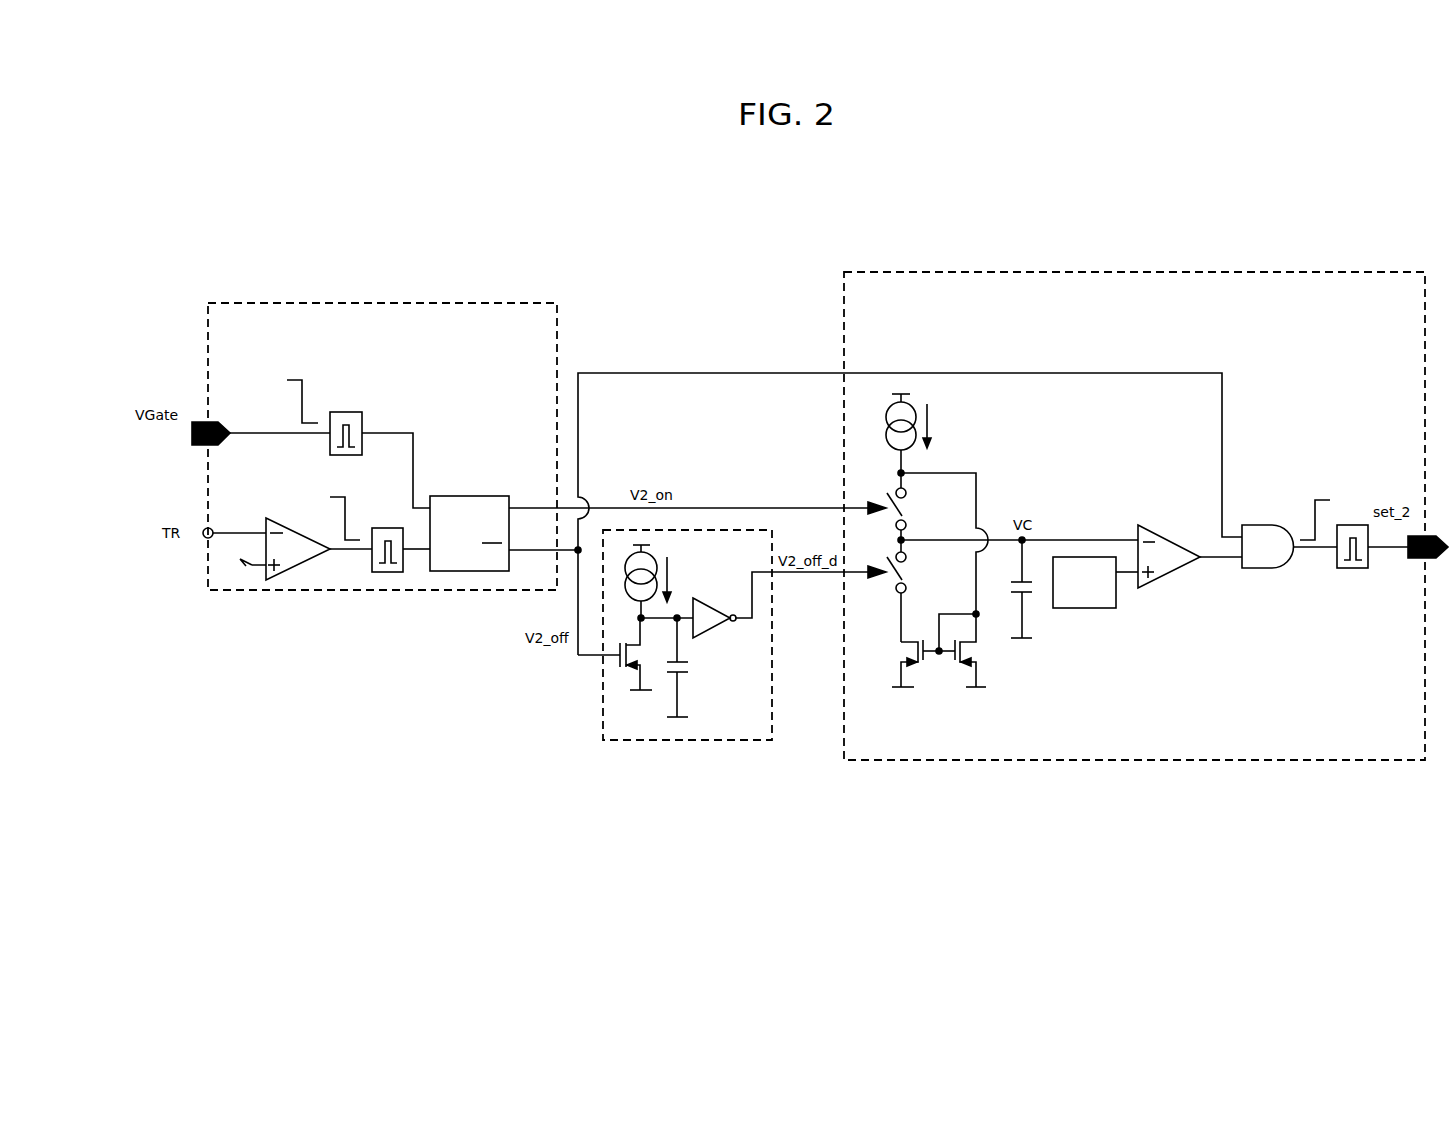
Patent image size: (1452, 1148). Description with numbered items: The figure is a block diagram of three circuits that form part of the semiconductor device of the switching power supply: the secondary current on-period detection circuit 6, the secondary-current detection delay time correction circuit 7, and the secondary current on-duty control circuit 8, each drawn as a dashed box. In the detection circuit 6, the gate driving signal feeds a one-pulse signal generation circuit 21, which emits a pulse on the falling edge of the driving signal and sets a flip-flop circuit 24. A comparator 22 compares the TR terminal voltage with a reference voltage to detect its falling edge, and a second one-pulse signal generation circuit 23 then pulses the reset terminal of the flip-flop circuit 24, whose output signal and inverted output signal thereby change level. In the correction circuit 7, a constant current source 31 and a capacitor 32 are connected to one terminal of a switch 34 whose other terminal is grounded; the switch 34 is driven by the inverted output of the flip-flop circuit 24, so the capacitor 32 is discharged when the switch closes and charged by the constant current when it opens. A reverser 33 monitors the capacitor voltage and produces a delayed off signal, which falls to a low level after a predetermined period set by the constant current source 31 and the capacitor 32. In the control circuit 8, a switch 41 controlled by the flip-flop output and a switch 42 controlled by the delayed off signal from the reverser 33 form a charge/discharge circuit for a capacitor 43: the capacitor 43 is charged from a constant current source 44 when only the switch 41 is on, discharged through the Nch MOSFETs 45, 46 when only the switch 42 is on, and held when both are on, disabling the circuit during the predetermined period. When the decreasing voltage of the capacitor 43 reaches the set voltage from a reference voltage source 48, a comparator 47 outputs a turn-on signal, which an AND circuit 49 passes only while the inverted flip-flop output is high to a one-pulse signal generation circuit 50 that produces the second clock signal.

The secondary current on-period detection circuit 6 is at (307, 303).
The secondary-current detection delay time correction circuit 7 is at (625, 740).
The secondary current on-duty control circuit 8 is at (1046, 762).
The one-pulse signal generation circuit 21 is at (352, 412).
The comparator 22 is at (290, 529).
The one-pulse signal generation circuit 23 is at (392, 528).
The flip-flop circuit 24 is at (490, 496).
The constant current source 31 is at (654, 560).
The capacitor 32 is at (689, 665).
The reverser 33 is at (711, 598).
The switch 34 is at (623, 669).
The switch 41 is at (907, 511).
The switch 42 is at (907, 576).
The capacitor 43 is at (1034, 588).
The constant current source 44 is at (918, 396).
The Nch MOSFET 45 is at (920, 664).
The Nch MOSFET 46 is at (978, 650).
The comparator 47 is at (1170, 578).
The reference voltage source 48 is at (1108, 608).
The AND circuit 49 is at (1262, 570).
The one-pulse signal generation circuit 50 is at (1352, 570).